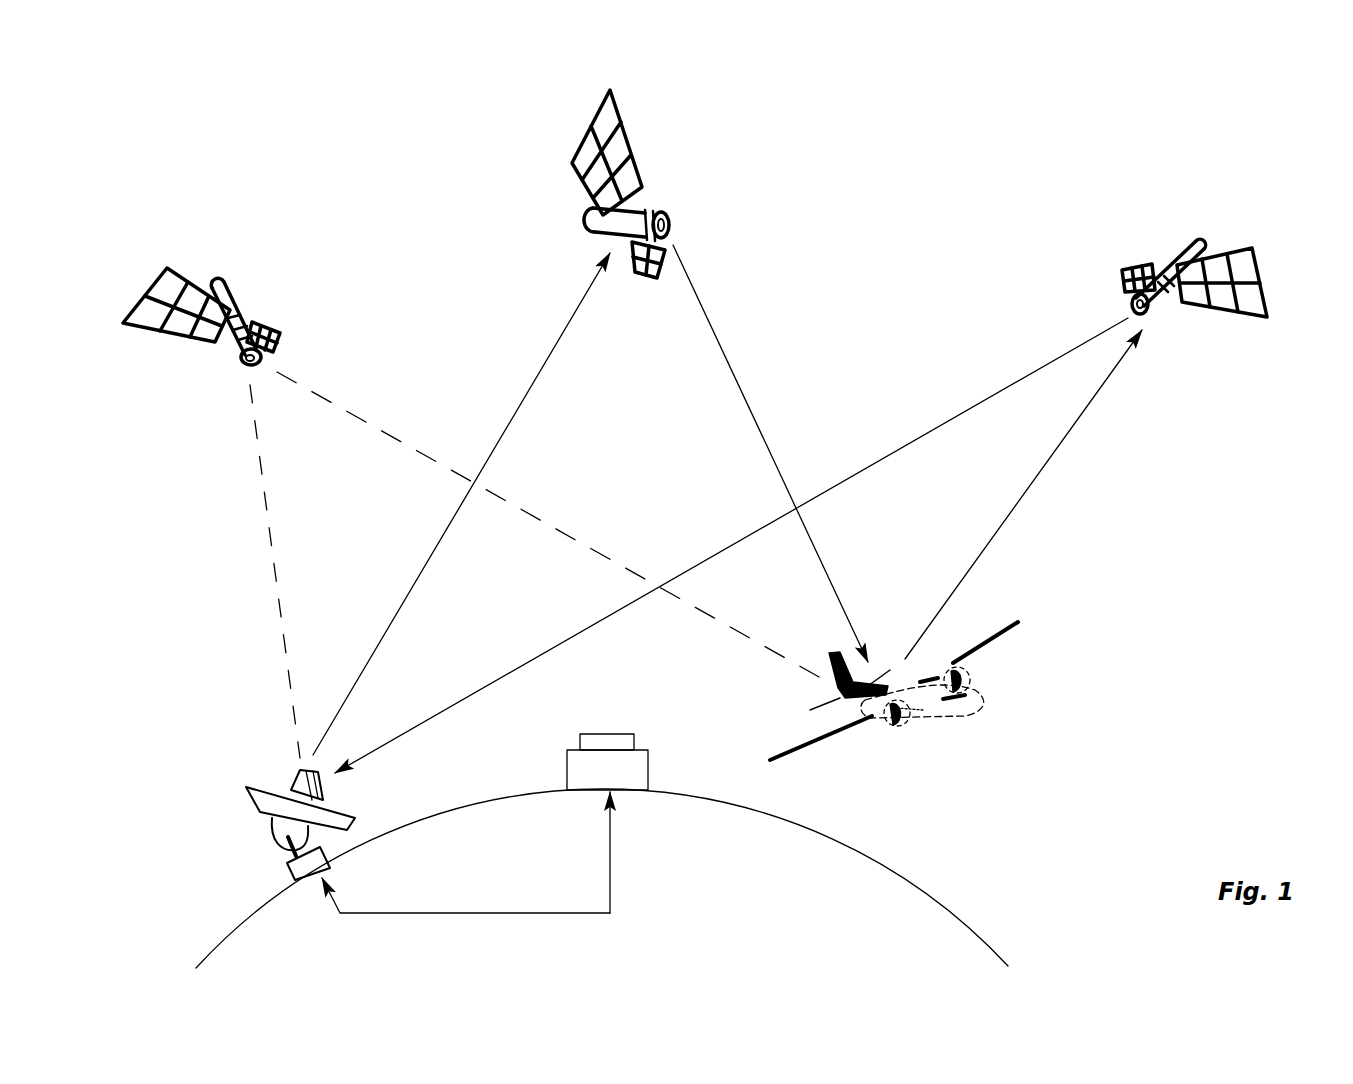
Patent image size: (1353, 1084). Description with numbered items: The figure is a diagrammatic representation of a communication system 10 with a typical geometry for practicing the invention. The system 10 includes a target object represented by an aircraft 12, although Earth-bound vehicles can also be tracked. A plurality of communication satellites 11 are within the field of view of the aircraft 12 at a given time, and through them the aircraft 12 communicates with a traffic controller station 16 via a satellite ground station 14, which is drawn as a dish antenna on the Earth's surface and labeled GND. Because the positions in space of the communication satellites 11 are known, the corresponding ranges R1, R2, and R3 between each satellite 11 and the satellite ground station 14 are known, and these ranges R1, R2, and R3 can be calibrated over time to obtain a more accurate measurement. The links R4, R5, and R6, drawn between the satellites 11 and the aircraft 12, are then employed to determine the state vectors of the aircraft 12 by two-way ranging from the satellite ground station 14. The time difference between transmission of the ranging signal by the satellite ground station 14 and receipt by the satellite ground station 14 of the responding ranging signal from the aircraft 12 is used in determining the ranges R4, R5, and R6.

The communication system 10 is at (866, 244).
The communication satellites 11 is at (585, 210).
The aircraft 12 is at (965, 705).
The satellite ground station 14 is at (270, 832).
The traffic controller station 16 is at (650, 767).
The ground station antenna GND is at (266, 782).
The range R1 is at (266, 468).
The range R2 is at (530, 390).
The range R3 is at (876, 462).
The link R4 is at (355, 412).
The link R5 is at (745, 392).
The link R6 is at (1045, 470).